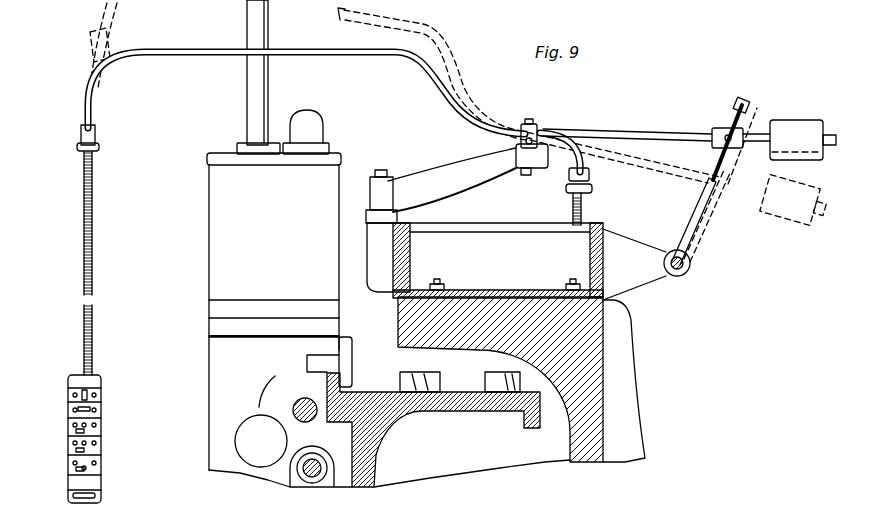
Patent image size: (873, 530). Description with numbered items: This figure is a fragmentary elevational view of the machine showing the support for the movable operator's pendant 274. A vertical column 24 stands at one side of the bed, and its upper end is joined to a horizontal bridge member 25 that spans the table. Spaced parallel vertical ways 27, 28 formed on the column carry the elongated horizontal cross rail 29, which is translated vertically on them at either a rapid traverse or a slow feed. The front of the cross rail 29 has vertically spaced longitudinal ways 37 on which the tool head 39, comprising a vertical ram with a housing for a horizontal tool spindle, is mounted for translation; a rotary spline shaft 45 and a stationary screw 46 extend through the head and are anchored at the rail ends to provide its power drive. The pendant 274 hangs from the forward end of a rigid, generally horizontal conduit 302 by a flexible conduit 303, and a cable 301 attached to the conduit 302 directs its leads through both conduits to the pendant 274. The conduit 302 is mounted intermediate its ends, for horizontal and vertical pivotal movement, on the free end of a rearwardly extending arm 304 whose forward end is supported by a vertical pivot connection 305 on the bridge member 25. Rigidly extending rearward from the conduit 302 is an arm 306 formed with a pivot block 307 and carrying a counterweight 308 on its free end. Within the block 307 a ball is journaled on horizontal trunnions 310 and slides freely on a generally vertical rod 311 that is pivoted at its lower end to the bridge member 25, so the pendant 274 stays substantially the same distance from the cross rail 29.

The vertical column 24 is at (628, 400).
The horizontal bridge member 25 is at (405, 320).
The vertical way 27 is at (432, 386).
The vertical way 28 is at (490, 385).
The cross rail 29 is at (392, 420).
The longitudinal ways 37 is at (336, 394).
The tool head 39 is at (209, 280).
The rotary spline shaft 45 is at (277, 387).
The stationary screw 46 is at (318, 477).
The pendant 274 is at (100, 385).
The cable 301 is at (585, 219).
The rigid conduit 302 is at (215, 55).
The flexible conduit 303 is at (92, 300).
The arm 304 is at (432, 177).
The vertical pivot connection 305 is at (368, 180).
The arm 306 is at (657, 131).
The pivot block 307 is at (719, 129).
The counterweight 308 is at (812, 119).
The horizontal trunnions 310 is at (723, 139).
The vertical rod 311 is at (707, 216).